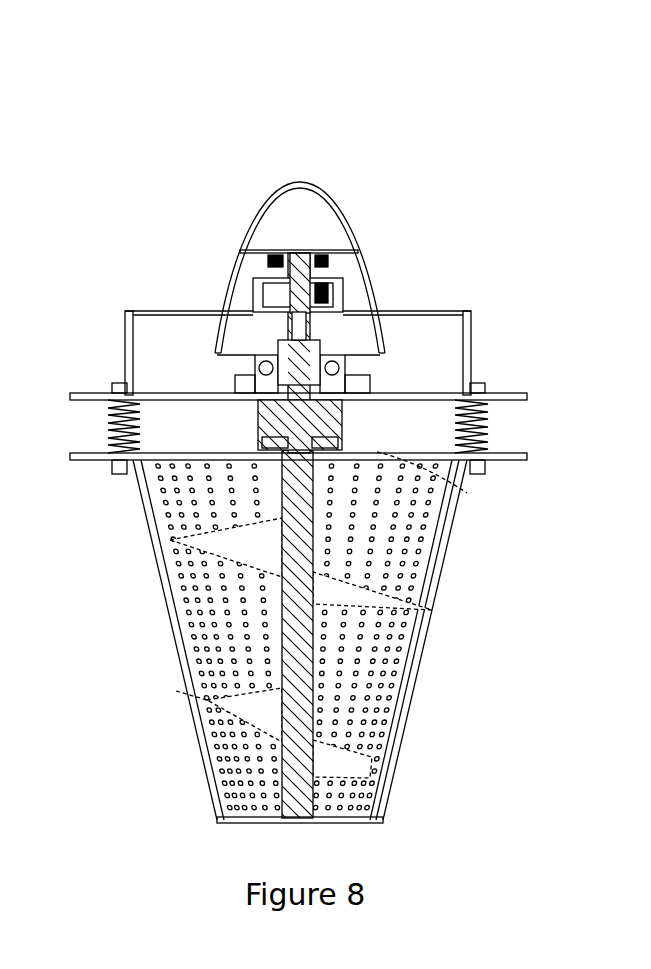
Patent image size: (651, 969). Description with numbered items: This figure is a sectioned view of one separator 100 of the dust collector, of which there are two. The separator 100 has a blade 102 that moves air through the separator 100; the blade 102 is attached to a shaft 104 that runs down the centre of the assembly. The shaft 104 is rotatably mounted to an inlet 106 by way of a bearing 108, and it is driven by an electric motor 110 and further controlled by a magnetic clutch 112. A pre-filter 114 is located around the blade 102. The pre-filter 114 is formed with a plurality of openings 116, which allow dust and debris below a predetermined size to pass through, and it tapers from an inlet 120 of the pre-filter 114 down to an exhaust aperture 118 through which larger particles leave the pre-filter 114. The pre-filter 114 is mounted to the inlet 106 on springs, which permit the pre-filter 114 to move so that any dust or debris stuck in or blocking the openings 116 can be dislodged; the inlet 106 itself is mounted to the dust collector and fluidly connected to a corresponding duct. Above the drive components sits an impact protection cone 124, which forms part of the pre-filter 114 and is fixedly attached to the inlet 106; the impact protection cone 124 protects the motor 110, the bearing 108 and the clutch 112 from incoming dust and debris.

The separator 100 is at (107, 85).
The blade 102 is at (345, 596).
The shaft 104 is at (295, 660).
The inlet 106 is at (128, 362).
The bearing 108 is at (368, 386).
The electric motor 110 is at (352, 292).
The magnetic clutch 112 is at (342, 438).
The pre-filter 114 is at (180, 645).
The openings 116 is at (140, 490).
The exhaust aperture 118 is at (341, 820).
The inlet of the pre-filter 120 is at (158, 456).
The impact protection cone 124 is at (347, 208).